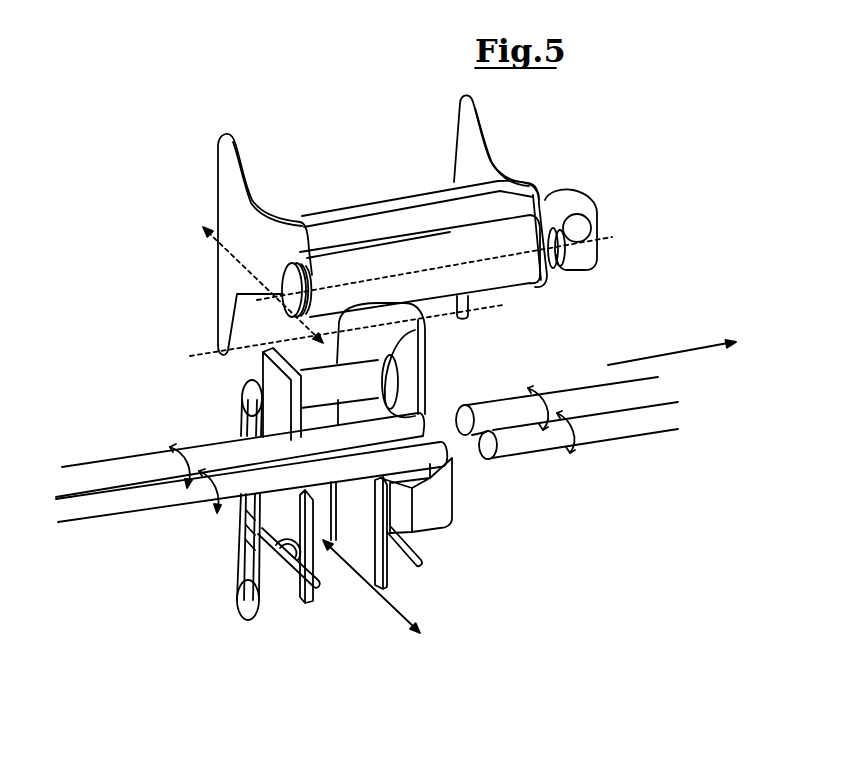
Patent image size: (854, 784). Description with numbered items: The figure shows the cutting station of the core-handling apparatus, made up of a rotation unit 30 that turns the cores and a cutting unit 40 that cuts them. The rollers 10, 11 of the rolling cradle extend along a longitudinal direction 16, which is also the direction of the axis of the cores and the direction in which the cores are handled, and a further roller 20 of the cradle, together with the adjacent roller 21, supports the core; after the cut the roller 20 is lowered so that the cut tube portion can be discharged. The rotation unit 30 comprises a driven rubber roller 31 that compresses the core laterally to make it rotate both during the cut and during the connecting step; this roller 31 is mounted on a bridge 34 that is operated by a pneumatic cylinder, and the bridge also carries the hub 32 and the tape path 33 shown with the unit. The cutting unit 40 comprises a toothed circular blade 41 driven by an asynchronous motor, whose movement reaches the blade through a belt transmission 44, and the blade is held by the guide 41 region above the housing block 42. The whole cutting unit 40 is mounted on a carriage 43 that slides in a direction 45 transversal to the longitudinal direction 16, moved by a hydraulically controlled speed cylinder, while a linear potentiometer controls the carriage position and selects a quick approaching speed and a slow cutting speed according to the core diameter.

The roller 10 is at (158, 495).
The roller 11 is at (103, 470).
The longitudinal direction 16 is at (650, 358).
The roller 20 is at (642, 413).
The roller 21 is at (596, 397).
The rotation unit 30 is at (382, 118).
The driven rubber roller 31 is at (505, 272).
The hub 32 is at (560, 215).
The tape 33 is at (196, 352).
The bridge 34 is at (478, 145).
The cutting unit 40 is at (182, 677).
The toothed circular blade 41 is at (403, 390).
The housing block 42 is at (433, 497).
The carriage 43 is at (283, 583).
The belt transmission 44 is at (228, 580).
The direction 45 is at (392, 607).